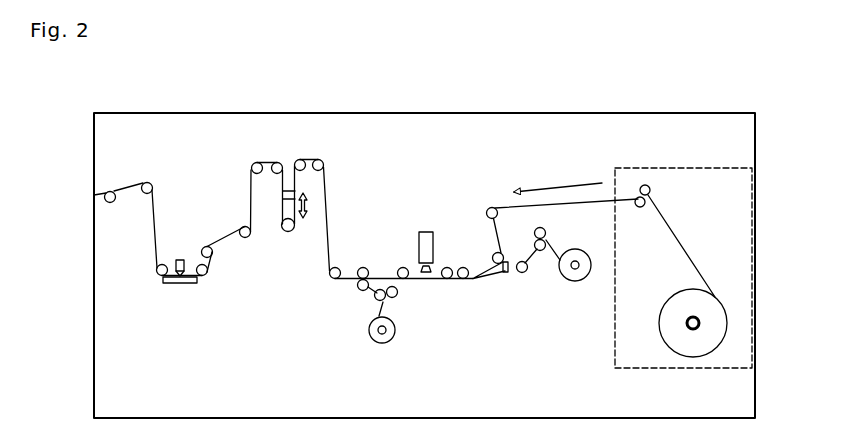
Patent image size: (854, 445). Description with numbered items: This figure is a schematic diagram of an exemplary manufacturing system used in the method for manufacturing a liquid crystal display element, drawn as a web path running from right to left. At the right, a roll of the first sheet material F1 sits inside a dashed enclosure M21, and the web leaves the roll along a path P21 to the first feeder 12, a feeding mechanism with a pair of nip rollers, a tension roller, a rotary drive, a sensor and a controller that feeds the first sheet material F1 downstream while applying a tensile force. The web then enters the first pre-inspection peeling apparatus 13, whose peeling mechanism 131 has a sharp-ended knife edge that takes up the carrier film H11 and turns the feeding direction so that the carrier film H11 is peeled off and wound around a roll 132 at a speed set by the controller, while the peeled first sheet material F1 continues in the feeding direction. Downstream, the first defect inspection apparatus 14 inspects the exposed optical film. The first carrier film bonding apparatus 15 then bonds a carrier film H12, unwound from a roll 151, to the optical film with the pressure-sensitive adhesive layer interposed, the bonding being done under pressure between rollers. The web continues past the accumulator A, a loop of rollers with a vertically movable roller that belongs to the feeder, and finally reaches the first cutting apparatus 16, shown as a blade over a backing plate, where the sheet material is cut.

The first feeder 12 is at (661, 188).
The first pre-inspection peeling apparatus 13 is at (555, 279).
The peeling mechanism 131 is at (503, 277).
The roll 132 is at (575, 270).
The first defect inspection apparatus 14 is at (423, 231).
The first carrier film bonding apparatus 15 is at (359, 324).
The roll 151 is at (385, 339).
The first cutting apparatus 16 is at (180, 259).
The accumulator A is at (287, 248).
The carrier film H11 is at (553, 256).
The carrier film H12 is at (385, 307).
The web path P21 is at (680, 230).
The unwinding unit M21 is at (683, 246).
The first sheet material F1 is at (717, 296).